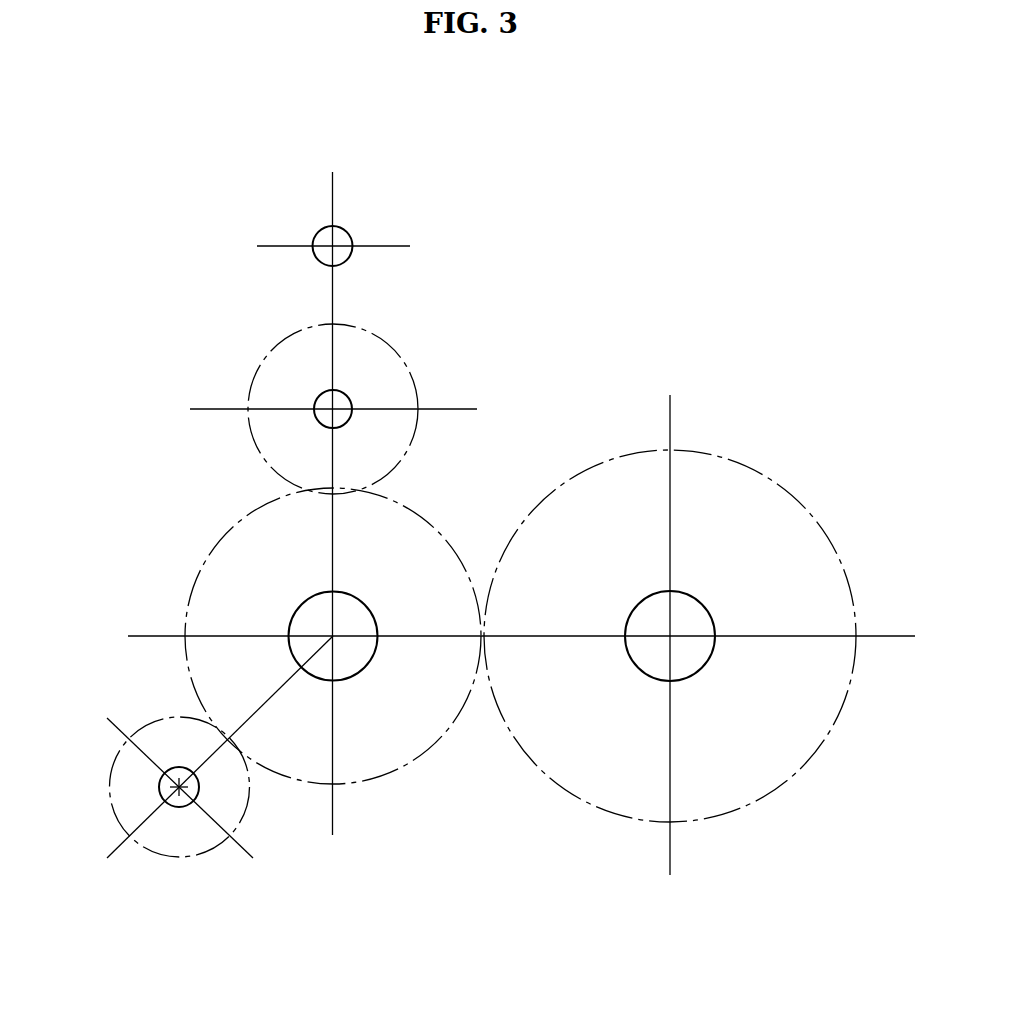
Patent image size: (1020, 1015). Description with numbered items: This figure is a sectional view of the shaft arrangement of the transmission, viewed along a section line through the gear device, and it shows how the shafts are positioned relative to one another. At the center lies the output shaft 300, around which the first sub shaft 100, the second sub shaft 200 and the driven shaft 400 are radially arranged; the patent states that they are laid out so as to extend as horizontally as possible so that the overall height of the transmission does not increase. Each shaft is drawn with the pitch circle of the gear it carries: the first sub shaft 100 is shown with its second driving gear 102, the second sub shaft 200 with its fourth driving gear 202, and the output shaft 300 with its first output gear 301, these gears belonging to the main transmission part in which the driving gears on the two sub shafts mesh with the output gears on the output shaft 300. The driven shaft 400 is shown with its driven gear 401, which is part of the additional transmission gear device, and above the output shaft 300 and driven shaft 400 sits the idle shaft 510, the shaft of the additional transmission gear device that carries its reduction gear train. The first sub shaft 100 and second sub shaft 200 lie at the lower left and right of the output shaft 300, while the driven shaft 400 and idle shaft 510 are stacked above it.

The first sub shaft 100 is at (159, 782).
The second driving gear 102 is at (178, 857).
The second sub shaft 200 is at (638, 667).
The fourth driving gear 202 is at (614, 807).
The output shaft 300 is at (300, 605).
The first output gear 301 is at (400, 767).
The driven shaft 400 is at (318, 391).
The driven gear 401 is at (388, 343).
The idle shaft 510 is at (347, 230).